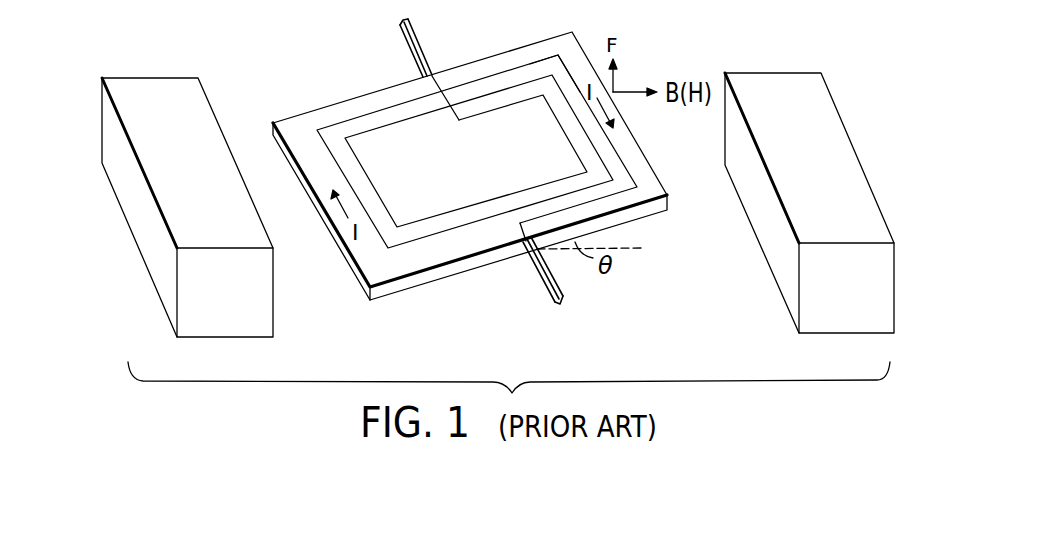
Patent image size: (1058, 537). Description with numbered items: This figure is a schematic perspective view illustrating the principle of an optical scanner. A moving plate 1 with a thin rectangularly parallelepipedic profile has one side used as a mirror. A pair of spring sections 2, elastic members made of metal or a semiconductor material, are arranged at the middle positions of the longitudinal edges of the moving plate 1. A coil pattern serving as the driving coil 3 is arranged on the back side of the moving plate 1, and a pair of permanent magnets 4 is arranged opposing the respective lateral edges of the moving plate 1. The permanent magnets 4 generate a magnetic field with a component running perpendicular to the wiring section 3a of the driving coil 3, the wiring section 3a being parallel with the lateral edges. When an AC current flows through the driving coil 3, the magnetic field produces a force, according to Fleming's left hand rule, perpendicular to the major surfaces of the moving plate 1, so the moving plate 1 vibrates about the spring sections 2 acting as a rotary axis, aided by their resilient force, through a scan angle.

The moving plate 1 is at (305, 120).
The spring sections 2 is at (398, 27).
The driving coil 3 is at (490, 73).
The wiring section 3a is at (571, 62).
The permanent magnets 4 is at (185, 77).